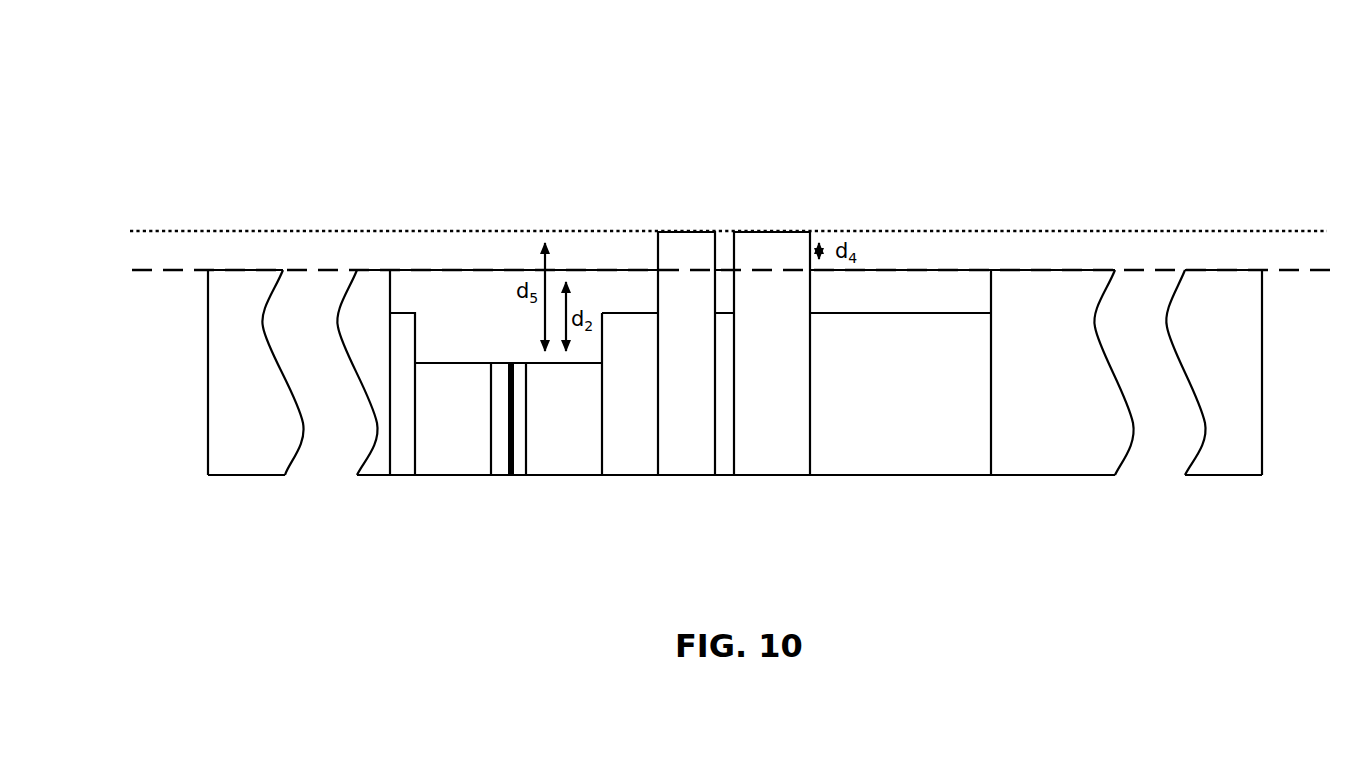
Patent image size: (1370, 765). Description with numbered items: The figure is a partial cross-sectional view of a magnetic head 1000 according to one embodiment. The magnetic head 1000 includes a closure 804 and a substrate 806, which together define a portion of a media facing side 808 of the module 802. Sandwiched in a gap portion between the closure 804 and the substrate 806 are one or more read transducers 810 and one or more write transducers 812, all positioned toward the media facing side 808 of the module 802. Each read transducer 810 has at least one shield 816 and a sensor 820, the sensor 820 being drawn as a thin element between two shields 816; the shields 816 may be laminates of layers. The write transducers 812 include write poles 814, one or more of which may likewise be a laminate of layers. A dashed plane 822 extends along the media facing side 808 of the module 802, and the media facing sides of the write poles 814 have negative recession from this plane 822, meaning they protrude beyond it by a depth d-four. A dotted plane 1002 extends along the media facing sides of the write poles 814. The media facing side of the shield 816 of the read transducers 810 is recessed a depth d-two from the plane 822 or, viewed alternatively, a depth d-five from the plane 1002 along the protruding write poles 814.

The magnetic head 1000 is at (405, 70).
The plane 1002 is at (1047, 231).
The plane 822 is at (1326, 269).
The module 802 is at (178, 332).
The closure 804 is at (1218, 293).
The substrate 806 is at (243, 293).
The media facing side 808 is at (461, 258).
The read transducers 810 is at (602, 493).
The write transducers 812 is at (808, 493).
The write poles 814 is at (707, 398).
The shield 816 is at (472, 433).
The sensor 820 is at (508, 389).